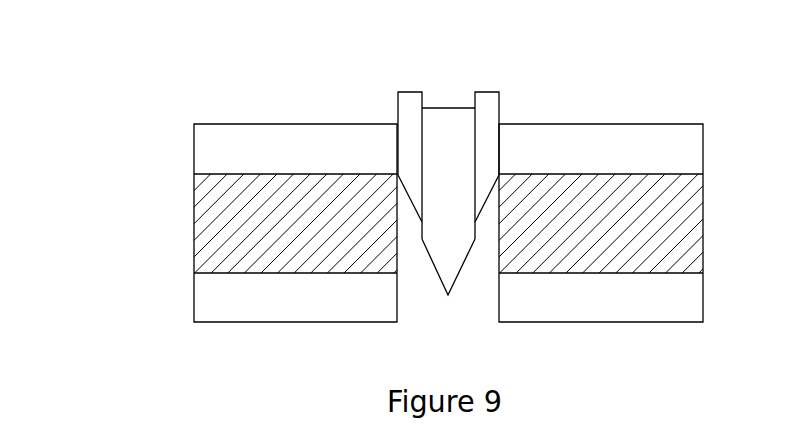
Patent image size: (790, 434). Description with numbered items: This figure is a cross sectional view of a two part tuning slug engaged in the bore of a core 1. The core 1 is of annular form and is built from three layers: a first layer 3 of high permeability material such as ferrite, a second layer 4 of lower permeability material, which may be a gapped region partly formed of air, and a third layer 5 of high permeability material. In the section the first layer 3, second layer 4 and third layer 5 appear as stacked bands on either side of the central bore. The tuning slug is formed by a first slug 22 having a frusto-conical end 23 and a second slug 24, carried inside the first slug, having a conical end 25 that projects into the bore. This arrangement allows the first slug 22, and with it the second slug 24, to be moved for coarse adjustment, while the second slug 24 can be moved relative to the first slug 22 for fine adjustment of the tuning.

The core 1 is at (88, 68).
The first layer 3 is at (223, 310).
The second layer 4 is at (225, 238).
The third layer 5 is at (223, 155).
The first slug 22 is at (486, 135).
The frusto-conical end 23 is at (487, 203).
The second slug 24 is at (466, 142).
The conical end 25 is at (437, 278).